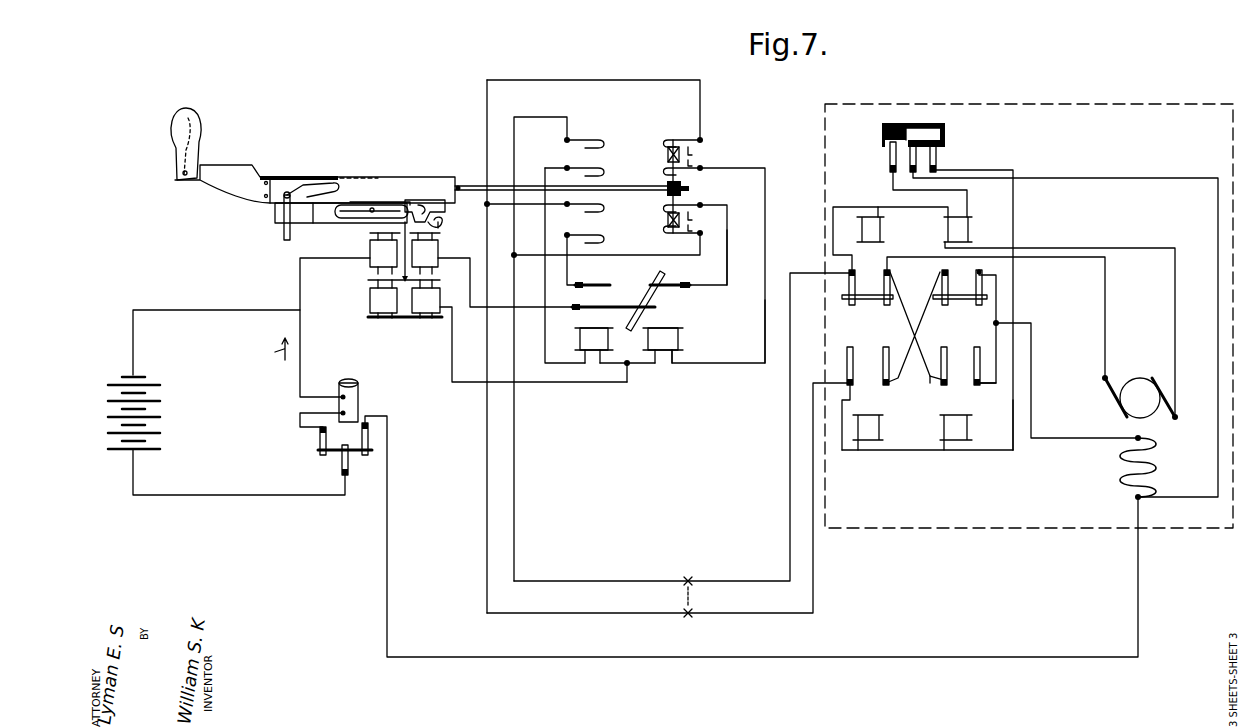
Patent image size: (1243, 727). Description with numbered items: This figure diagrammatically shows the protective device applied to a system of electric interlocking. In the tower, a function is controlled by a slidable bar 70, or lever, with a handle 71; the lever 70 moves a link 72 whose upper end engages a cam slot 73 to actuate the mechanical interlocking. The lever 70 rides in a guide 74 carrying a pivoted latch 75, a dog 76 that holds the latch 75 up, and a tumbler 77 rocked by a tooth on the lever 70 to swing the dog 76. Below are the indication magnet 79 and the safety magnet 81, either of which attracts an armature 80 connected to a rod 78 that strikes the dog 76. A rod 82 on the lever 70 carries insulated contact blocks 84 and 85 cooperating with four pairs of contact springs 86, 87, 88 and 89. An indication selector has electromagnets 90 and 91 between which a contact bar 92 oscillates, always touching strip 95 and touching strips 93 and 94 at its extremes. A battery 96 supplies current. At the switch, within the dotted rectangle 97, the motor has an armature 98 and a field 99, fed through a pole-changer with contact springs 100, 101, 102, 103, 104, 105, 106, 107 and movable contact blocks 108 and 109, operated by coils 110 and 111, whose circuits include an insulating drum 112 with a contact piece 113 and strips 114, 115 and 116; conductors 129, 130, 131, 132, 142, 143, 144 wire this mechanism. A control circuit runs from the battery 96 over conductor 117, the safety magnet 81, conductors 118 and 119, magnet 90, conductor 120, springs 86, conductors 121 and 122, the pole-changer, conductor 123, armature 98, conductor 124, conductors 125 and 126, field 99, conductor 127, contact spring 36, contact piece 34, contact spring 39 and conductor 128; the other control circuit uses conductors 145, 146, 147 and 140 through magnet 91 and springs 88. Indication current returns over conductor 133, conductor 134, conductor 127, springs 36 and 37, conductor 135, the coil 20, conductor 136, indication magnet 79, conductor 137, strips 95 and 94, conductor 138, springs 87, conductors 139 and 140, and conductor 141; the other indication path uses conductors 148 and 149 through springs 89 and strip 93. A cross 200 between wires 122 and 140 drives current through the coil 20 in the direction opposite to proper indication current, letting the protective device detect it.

The coil 20 is at (358, 398).
The contact piece 34 is at (338, 455).
The contact spring 36 is at (368, 440).
The contact spring 37 is at (320, 441).
The contact spring 39 is at (350, 466).
The slidable bar 70 is at (410, 175).
The handle 71 is at (175, 145).
The link 72 is at (284, 238).
The cam slot 73 is at (300, 183).
The guide 74 is at (322, 222).
The latch 75 is at (382, 200).
The dog 76 is at (430, 194).
The tumbler 77 is at (442, 226).
The rod 78 is at (370, 233).
The indication magnet 79 is at (404, 252).
The armature 80 is at (438, 280).
The safety magnet 81 is at (405, 299).
The rod 82 is at (633, 189).
The contact block 84 is at (668, 150).
The contact block 85 is at (668, 215).
The contact springs 86 is at (564, 165).
The contact springs 87 is at (580, 228).
The contact springs 88 is at (696, 148).
The contact springs 89 is at (694, 212).
The electromagnet 90 is at (594, 345).
The electromagnet 91 is at (663, 345).
The contact bar 92 is at (652, 300).
The contact strip 93 is at (676, 283).
The contact strip 94 is at (610, 284).
The contact strip 95 is at (620, 307).
The battery 96 is at (160, 408).
The dotted rectangle 97 is at (1150, 102).
The armature 98 is at (1142, 378).
The field 99 is at (1124, 465).
The contact spring 100 is at (849, 286).
The contact spring 101 is at (884, 286).
The contact spring 102 is at (948, 286).
The contact spring 103 is at (982, 287).
The contact spring 104 is at (849, 348).
The contact spring 105 is at (886, 348).
The contact spring 106 is at (944, 348).
The contact spring 107 is at (977, 348).
The contact block 108 is at (876, 300).
The contact block 109 is at (972, 300).
The pole-changer operating coils 110 is at (873, 440).
The pole-changer operating coils 111 is at (866, 216).
The drum 112 is at (945, 130).
The contact piece 113 is at (912, 132).
The contact strip 114 is at (890, 158).
The contact strip 115 is at (916, 157).
The contact strip 116 is at (936, 163).
The conductor 117 is at (133, 342).
The conductor 118 is at (452, 341).
The conductor 119 is at (618, 366).
The conductor 120 is at (545, 352).
The conductor 121 is at (567, 118).
The conductor 122 is at (514, 400).
The conductor 123 is at (905, 256).
The conductor 124 is at (995, 243).
The conductor 125 is at (998, 312).
The conductor 126 is at (1031, 335).
The conductor 127 is at (388, 474).
The conductor 128 is at (205, 495).
The conductor 129 is at (833, 240).
The conductor 130 is at (924, 207).
The conductor 131 is at (968, 192).
The conductor 132 is at (1085, 180).
The conductor 133 is at (912, 298).
The conductor 134 is at (992, 385).
The conductor 135 is at (300, 415).
The conductor 136 is at (300, 370).
The conductor 137 is at (475, 257).
The conductor 138 is at (567, 268).
The conductor 139 is at (536, 205).
The conductor 140 is at (487, 400).
The conductor 141 is at (922, 328).
The conductor 142 is at (850, 400).
The conductor 143 is at (920, 451).
The conductor 144 is at (1013, 452).
The conductor 145 is at (648, 366).
The conductor 146 is at (748, 338).
The conductor 147 is at (660, 80).
The conductor 148 is at (620, 255).
The conductor 149 is at (728, 241).
The cross 200 is at (696, 601).